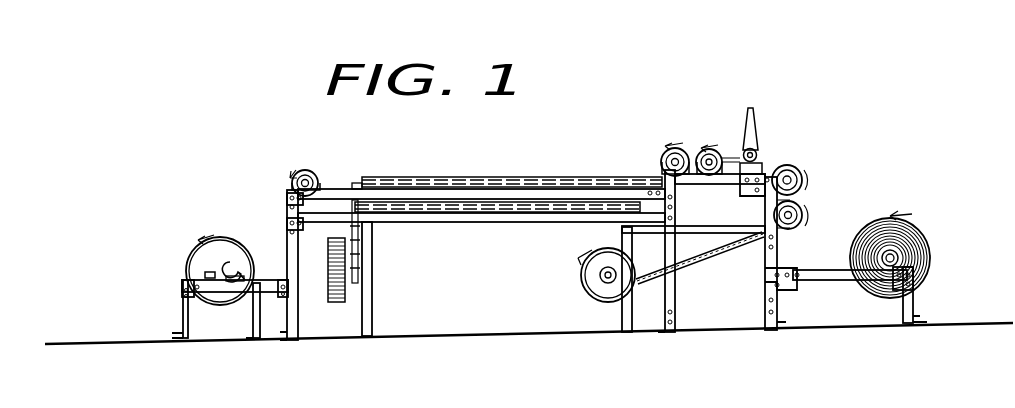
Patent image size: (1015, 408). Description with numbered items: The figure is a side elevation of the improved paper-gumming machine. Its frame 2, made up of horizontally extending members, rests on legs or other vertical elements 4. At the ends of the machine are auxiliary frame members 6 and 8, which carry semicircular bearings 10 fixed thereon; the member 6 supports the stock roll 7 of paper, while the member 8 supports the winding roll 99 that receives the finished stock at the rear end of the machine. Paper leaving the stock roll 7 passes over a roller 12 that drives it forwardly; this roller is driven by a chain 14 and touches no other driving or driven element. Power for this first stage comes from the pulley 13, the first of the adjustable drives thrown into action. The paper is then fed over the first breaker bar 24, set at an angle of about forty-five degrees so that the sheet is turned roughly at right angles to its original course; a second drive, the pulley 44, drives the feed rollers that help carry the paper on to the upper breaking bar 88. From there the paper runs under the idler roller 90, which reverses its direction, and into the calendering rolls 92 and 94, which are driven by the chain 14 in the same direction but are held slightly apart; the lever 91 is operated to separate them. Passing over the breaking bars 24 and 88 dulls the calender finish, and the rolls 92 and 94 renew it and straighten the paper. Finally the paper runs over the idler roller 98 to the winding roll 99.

The frame 2 is at (462, 220).
The legs 4 is at (372, 300).
The auxiliary frame member 6 is at (815, 277).
The stock roll 7 is at (920, 275).
The auxiliary frame member 8 is at (245, 283).
The semicircular bearings 10 is at (213, 270).
The roller 12 is at (798, 209).
The pulley 13 is at (590, 279).
The chain 14 is at (701, 257).
The first breaker bar 24 is at (533, 212).
The pulley 44 is at (335, 303).
The upper breaking bar 88 is at (520, 182).
The idler roller 90 is at (793, 167).
The lever 91 is at (756, 124).
The calendering roll 92 is at (716, 146).
The calendering roll 94 is at (683, 152).
The idler roller 98 is at (318, 165).
The winding roll 99 is at (188, 258).